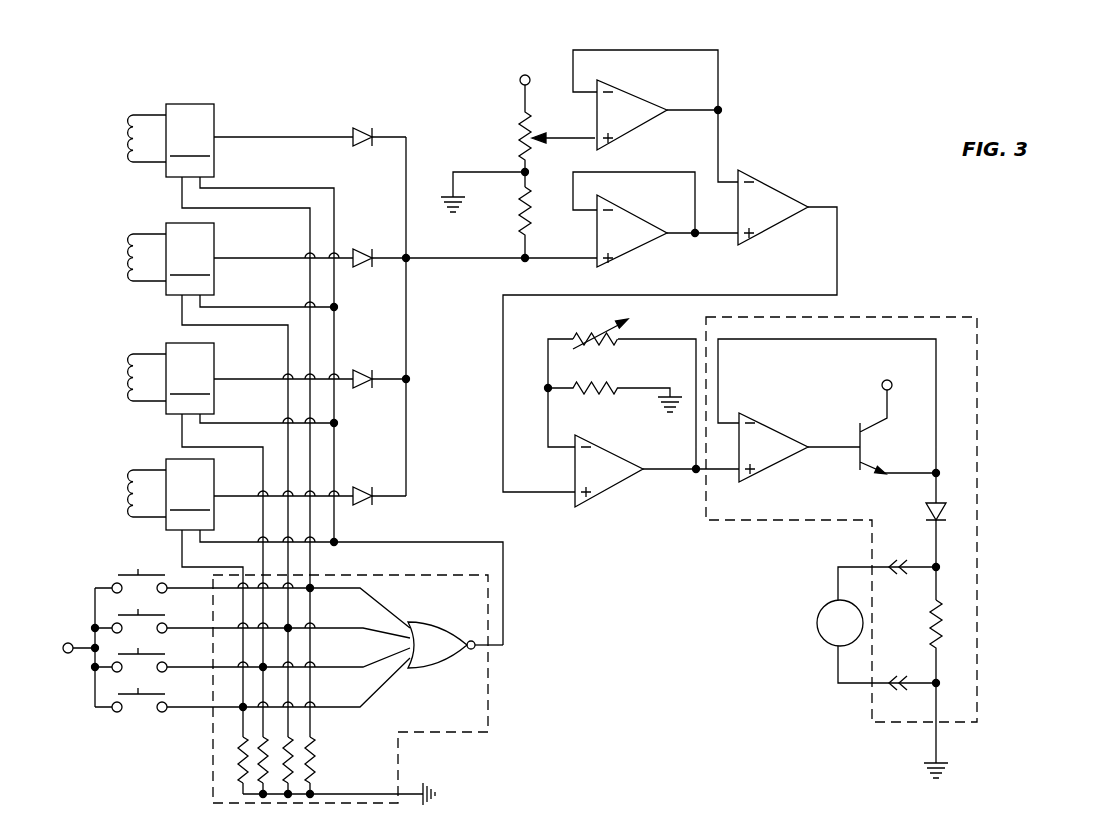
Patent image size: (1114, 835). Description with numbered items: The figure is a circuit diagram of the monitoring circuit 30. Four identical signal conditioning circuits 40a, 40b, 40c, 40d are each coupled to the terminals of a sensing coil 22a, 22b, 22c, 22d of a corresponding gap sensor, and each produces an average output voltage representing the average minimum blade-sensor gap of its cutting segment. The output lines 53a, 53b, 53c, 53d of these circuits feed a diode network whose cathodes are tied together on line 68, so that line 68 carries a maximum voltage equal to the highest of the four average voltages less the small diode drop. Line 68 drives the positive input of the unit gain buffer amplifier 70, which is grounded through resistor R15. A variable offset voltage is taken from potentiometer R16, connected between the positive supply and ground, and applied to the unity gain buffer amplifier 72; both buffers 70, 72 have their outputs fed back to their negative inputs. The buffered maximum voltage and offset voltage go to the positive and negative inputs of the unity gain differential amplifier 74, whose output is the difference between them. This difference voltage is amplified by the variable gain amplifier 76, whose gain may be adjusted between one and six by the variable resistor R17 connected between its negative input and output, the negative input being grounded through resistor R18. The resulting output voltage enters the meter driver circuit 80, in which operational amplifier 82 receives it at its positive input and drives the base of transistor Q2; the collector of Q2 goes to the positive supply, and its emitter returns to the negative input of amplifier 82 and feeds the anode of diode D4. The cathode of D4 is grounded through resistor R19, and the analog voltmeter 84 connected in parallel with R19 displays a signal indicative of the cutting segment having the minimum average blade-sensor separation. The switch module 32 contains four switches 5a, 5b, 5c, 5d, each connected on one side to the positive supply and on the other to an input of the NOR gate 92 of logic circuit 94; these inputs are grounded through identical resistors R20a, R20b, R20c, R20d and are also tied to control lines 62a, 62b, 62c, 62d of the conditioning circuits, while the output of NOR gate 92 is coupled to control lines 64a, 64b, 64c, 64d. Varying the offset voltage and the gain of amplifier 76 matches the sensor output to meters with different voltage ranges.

The monitoring circuit 30 is at (878, 98).
The sensing coil 22a is at (126, 143).
The sensing coil 22b is at (126, 259).
The sensing coil 22c is at (126, 379).
The sensing coil 22d is at (126, 491).
The signal conditioning circuit 40a is at (190, 140).
The signal conditioning circuit 40b is at (190, 259).
The signal conditioning circuit 40c is at (190, 378).
The signal conditioning circuit 40d is at (190, 494).
The output line 53a is at (330, 142).
The output line 53b is at (330, 265).
The output line 53c is at (330, 385).
The output line 53d is at (330, 502).
The control line 62a is at (181, 200).
The control line 62b is at (181, 320).
The control line 62c is at (181, 440).
The control line 62d is at (181, 553).
The control line 64a is at (226, 177).
The control line 64b is at (226, 294).
The control line 64c is at (226, 412).
The control line 64d is at (226, 530).
The line 68 is at (478, 262).
The unit gain buffer amplifier 70 is at (635, 221).
The unity gain buffer amplifier 72 is at (631, 99).
The unity gain differential amplifier 74 is at (770, 188).
The variable gain amplifier 76 is at (604, 455).
The meter driver circuit 80 is at (945, 318).
The operational amplifier 82 is at (775, 431).
The analog-type voltmeter 84 is at (826, 646).
The NOR gate 92 is at (434, 626).
The logic circuit 94 is at (447, 733).
The switch module 32 is at (110, 740).
The switch 5a is at (128, 575).
The switch 5b is at (160, 616).
The switch 5c is at (160, 656).
The switch 5d is at (160, 696).
The resistor R15 is at (486, 214).
The potentiometer R16 is at (535, 118).
The variable resistor R17 is at (600, 327).
The resistor R18 is at (615, 384).
The resistor R19 is at (921, 671).
The resistor R20a is at (311, 776).
The resistor R20b is at (291, 740).
The resistor R20c is at (261, 740).
The resistor R20d is at (238, 761).
The transistor Q2 is at (898, 415).
The diode D4 is at (919, 536).